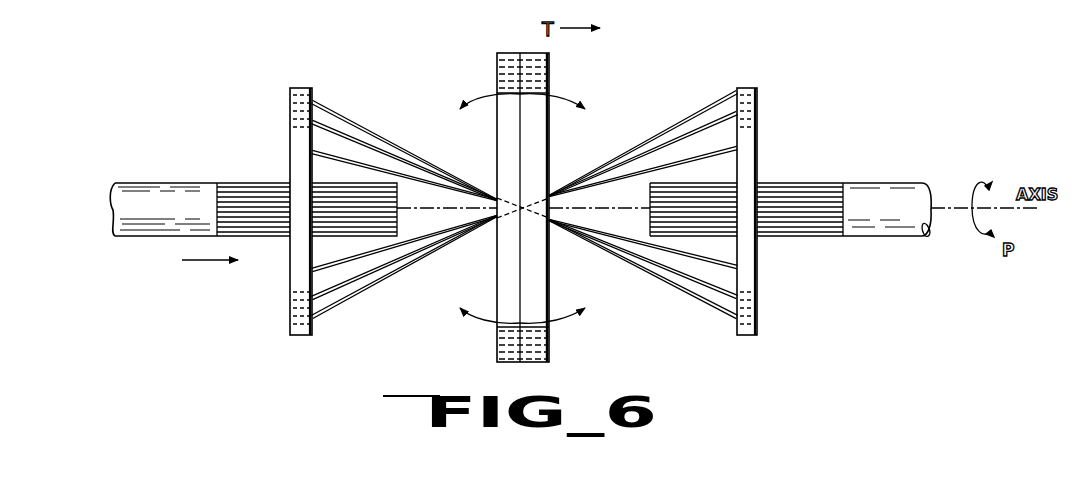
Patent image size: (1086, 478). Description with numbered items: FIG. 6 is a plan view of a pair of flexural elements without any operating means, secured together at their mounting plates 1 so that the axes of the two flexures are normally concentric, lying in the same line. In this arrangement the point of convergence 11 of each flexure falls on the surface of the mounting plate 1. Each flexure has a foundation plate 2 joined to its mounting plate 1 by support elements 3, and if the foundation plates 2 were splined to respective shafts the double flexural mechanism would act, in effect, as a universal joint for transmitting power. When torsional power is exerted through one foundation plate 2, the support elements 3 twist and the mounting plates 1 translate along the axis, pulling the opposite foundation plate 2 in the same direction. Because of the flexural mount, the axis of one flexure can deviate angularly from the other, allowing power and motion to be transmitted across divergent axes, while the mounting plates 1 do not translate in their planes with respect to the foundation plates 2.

The mounting plate 1 is at (525, 52).
The foundation plate 2 is at (300, 152).
The support element 3 is at (363, 125).
The point of convergence 11 is at (527, 200).